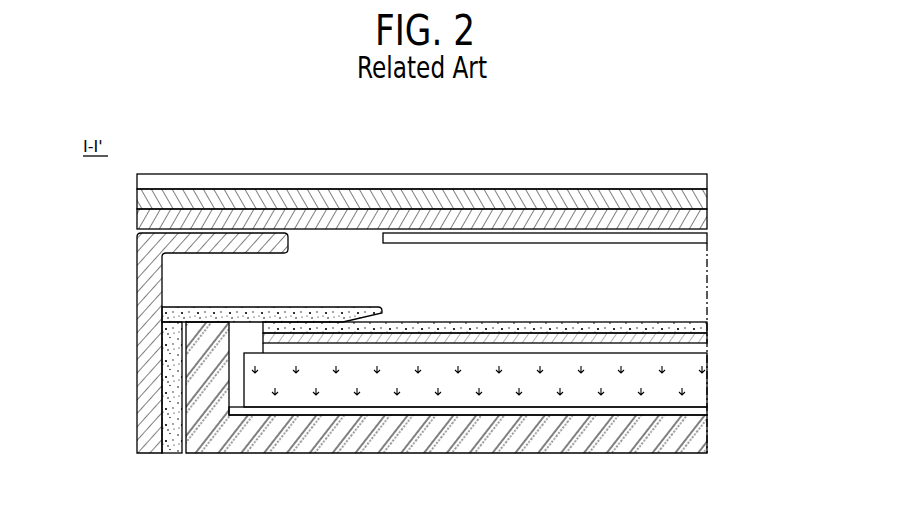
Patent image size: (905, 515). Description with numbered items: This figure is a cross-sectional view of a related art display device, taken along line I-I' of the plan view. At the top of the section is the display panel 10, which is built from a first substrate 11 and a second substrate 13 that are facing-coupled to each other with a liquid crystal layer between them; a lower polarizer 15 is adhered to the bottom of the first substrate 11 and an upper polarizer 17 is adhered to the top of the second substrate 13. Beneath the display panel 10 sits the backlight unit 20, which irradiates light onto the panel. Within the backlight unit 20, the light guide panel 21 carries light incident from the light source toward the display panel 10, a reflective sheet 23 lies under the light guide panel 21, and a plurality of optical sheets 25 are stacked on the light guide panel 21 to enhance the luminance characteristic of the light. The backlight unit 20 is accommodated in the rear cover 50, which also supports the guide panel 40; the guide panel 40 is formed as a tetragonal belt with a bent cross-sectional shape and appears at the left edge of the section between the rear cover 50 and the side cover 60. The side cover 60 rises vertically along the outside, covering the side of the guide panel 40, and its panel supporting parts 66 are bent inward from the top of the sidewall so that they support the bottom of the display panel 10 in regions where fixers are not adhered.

The display panel 10 is at (479, 204).
The first substrate 11 is at (707, 201).
The second substrate 13 is at (707, 221).
The lower polarizer 15 is at (581, 238).
The upper polarizer 17 is at (707, 182).
The backlight unit 20 is at (491, 363).
The light guide panel 21 is at (707, 378).
The reflective sheet 23 is at (504, 410).
The optical sheets 25 is at (707, 327).
The guide panel 40 is at (170, 392).
The rear cover 50 is at (700, 437).
The side cover 60 is at (137, 453).
The panel supporting parts 66 is at (203, 240).